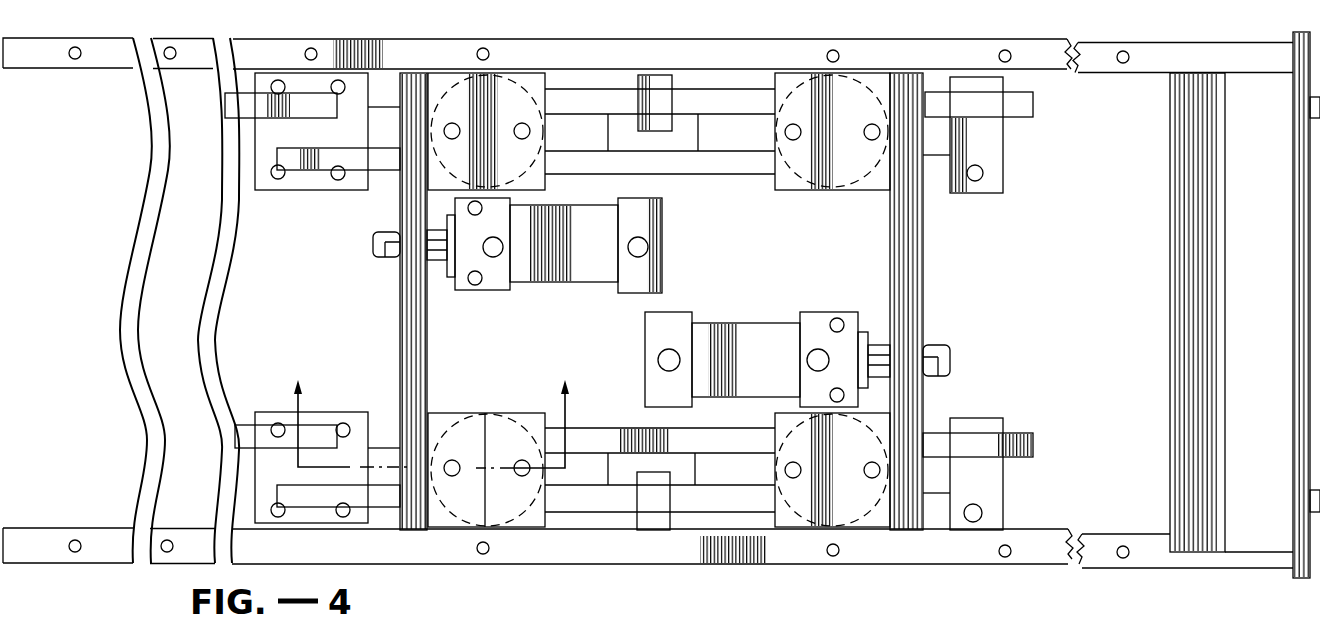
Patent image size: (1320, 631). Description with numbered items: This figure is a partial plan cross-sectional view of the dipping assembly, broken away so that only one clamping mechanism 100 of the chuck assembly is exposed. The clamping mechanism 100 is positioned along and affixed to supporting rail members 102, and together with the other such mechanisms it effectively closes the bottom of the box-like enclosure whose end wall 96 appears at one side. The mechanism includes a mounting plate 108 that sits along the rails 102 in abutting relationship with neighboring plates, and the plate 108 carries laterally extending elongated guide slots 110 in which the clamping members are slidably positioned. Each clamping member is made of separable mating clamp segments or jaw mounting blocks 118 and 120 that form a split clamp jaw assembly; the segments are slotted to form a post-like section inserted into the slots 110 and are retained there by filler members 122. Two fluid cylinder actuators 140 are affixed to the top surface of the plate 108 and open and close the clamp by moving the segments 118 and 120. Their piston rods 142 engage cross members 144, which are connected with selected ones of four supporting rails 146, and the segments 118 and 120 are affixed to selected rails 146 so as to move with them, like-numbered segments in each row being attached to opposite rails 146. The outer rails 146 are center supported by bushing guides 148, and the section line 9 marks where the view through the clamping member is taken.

The section line 9- 9 is at (434, 412).
The end wall 96 is at (1300, 308).
The clamping mechanism 100 is at (293, 273).
The supporting rail member 102 is at (1093, 67).
The mounting plate 108 is at (290, 253).
The guide slot 110 is at (727, 128).
The clamp segment 118 is at (518, 80).
The clamp segment 120 is at (440, 82).
The filler member 122 is at (255, 78).
The fluid cylinder actuator 140 is at (588, 242).
The piston rod 142 is at (433, 262).
The cross member 144 is at (420, 352).
The supporting rail 146 is at (1018, 110).
The bushing guide 148 is at (653, 116).